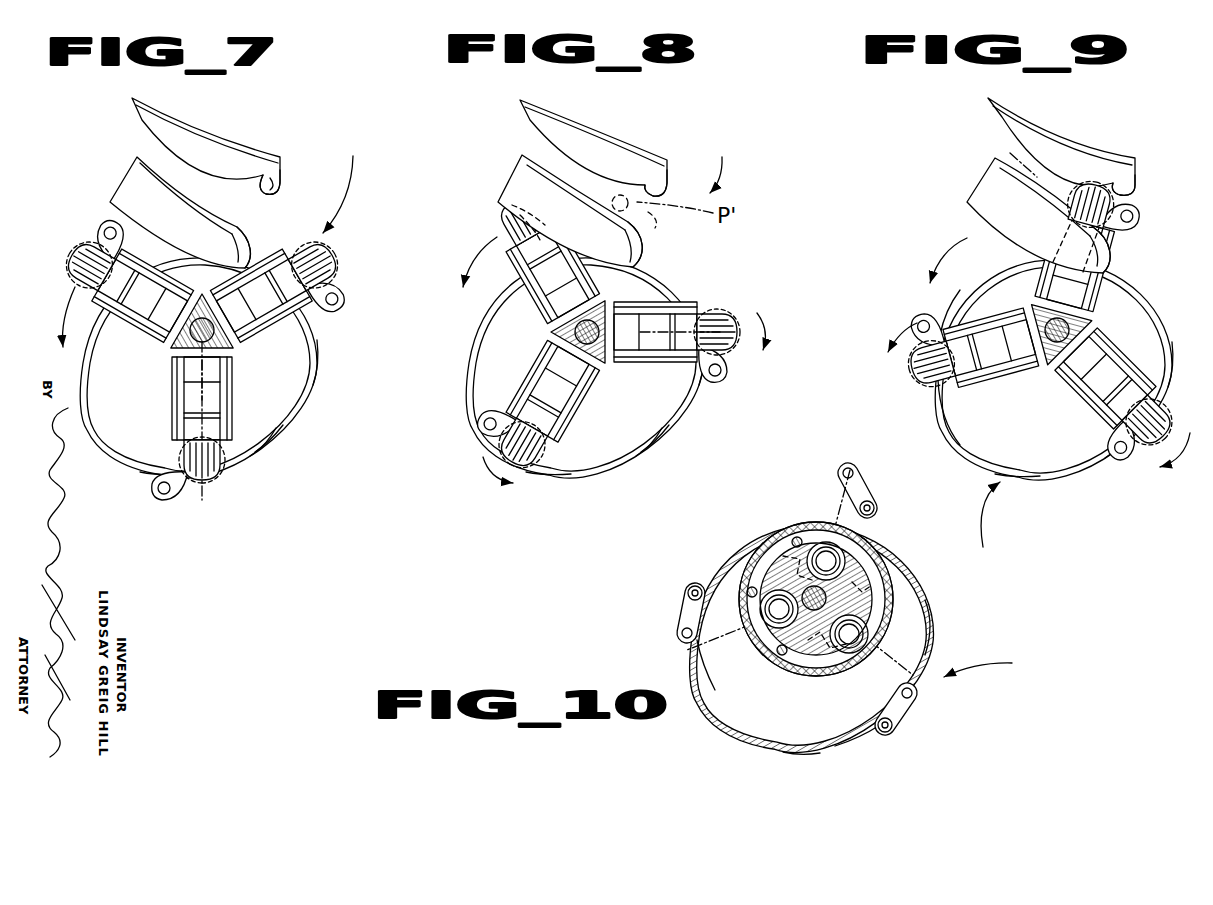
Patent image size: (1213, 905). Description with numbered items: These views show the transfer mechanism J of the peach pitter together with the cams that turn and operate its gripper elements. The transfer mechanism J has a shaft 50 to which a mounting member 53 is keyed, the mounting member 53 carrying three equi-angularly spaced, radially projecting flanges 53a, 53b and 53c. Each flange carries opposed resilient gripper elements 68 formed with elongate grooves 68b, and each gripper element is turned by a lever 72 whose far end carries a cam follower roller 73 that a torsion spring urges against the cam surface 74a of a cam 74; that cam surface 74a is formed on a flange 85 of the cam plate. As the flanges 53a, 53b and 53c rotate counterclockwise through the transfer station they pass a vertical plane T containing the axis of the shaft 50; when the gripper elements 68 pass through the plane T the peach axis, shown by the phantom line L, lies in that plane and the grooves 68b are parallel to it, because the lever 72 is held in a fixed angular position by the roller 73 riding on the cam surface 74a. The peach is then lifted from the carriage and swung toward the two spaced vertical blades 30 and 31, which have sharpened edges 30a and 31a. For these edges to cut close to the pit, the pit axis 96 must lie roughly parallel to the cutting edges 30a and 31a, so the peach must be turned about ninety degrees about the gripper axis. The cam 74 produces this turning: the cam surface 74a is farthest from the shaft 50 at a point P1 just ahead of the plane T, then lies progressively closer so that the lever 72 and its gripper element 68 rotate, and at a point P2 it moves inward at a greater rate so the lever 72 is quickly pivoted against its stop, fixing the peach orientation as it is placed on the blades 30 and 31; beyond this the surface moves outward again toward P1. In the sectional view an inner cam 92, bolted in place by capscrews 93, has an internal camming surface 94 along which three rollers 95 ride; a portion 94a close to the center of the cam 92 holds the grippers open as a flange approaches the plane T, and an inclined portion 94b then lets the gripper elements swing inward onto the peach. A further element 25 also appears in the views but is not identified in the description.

In FIG. 7, the pivot roller 25 is at (87, 243).
In FIG. 8, the pivot roller 25 is at (517, 228).
In FIG. 9, the pivot roller 25 is at (1112, 202).
In FIG. 7, the blade 30 is at (130, 182).
In FIG. 8, the blade 30 is at (520, 173).
In FIG. 9, the blade 30 is at (987, 208).
In FIG. 7, the sharpened edge 30a is at (243, 230).
In FIG. 8, the sharpened edge 30a is at (634, 250).
In FIG. 9, the sharpened edge 30a is at (1107, 253).
In FIG. 7, the blade 31 is at (190, 117).
In FIG. 8, the blade 31 is at (583, 130).
In FIG. 9, the blade 31 is at (1020, 108).
In FIG. 7, the sharpened edge 31a is at (270, 176).
In FIG. 8, the sharpened edge 31a is at (533, 118).
In FIG. 9, the sharpened edge 31a is at (1130, 180).
In FIG. 7, the shaft 50 is at (192, 335).
In FIG. 8, the shaft 50 is at (583, 332).
In FIG. 9, the shaft 50 is at (1062, 328).
In FIG. 10, the shaft 50 is at (806, 590).
In FIG. 7, the mounting member 53 is at (170, 330).
In FIG. 8, the mounting member 53 is at (590, 362).
In FIG. 9, the mounting member 53 is at (1050, 362).
In FIG. 10, the mounting member 53 is at (872, 588).
In FIG. 7, the flange 53a is at (186, 358).
In FIG. 8, the flange 53a is at (613, 360).
In FIG. 9, the flange 53a is at (1057, 288).
In FIG. 7, the flange 53b is at (230, 347).
In FIG. 8, the flange 53b is at (563, 313).
In FIG. 9, the flange 53b is at (1017, 353).
In FIG. 7, the flange 53c is at (202, 312).
In FIG. 8, the flange 53c is at (563, 347).
In FIG. 9, the flange 53c is at (1090, 347).
In FIG. 7, the gripper element 68 is at (73, 258).
In FIG. 8, the gripper element 68 is at (503, 217).
In FIG. 9, the gripper element 68 is at (917, 373).
In FIG. 7, the elongate grooves 68b is at (193, 480).
In FIG. 7, the lever 72 is at (318, 293).
In FIG. 8, the lever 72 is at (483, 440).
In FIG. 9, the lever 72 is at (933, 320).
In FIG. 10, the lever 72 is at (858, 487).
In FIG. 7, the cam follower roller 73 is at (314, 310).
In FIG. 8, the cam follower roller 73 is at (483, 437).
In FIG. 9, the cam follower roller 73 is at (940, 315).
In FIG. 10, the cam follower roller 73 is at (874, 508).
In FIG. 7, the cam 74 is at (117, 453).
In FIG. 8, the cam 74 is at (472, 403).
In FIG. 9, the cam 74 is at (950, 420).
In FIG. 10, the cam 74 is at (737, 720).
In FIG. 7, the cam surface 74a is at (267, 447).
In FIG. 8, the cam surface 74a is at (653, 453).
In FIG. 9, the cam surface 74a is at (977, 273).
In FIG. 10, the cam surface 74a is at (860, 728).
In FIG. 7, the flange 85 is at (287, 427).
In FIG. 8, the flange 85 is at (660, 437).
In FIG. 9, the flange 85 is at (967, 443).
In FIG. 10, the flange 85 is at (697, 662).
In FIG. 10, the inner cam 92 is at (743, 558).
In FIG. 10, the capscrews 93 is at (797, 538).
In FIG. 10, the internal camming surface 94 is at (883, 593).
In FIG. 10, the camming surface 94a is at (760, 570).
In FIG. 10, the inclined camming surface 94b is at (817, 670).
In FIG. 10, the rollers 95 is at (835, 555).
In FIG. 8, the pit axis 96 is at (653, 220).
In FIG. 7, the vertical plane T is at (204, 377).
In FIG. 7, the phantom line L is at (218, 423).
In FIG. 8, the phantom line L is at (743, 363).
In FIG. 9, the phantom line L is at (1010, 153).
In FIG. 7, the point P1 is at (163, 477).
In FIG. 8, the point P1 is at (547, 477).
In FIG. 9, the point P1 is at (1020, 477).
In FIG. 10, the point P1 is at (783, 752).
In FIG. 7, the point P2 is at (323, 365).
In FIG. 8, the point P2 is at (721, 373).
In FIG. 9, the point P2 is at (1170, 360).
In FIG. 10, the point P2 is at (932, 633).
In FIG. 7, the transfer mechanism J is at (338, 183).
In FIG. 8, the transfer mechanism J is at (716, 163).
In FIG. 9, the transfer mechanism J is at (990, 525).
In FIG. 10, the transfer mechanism J is at (985, 664).